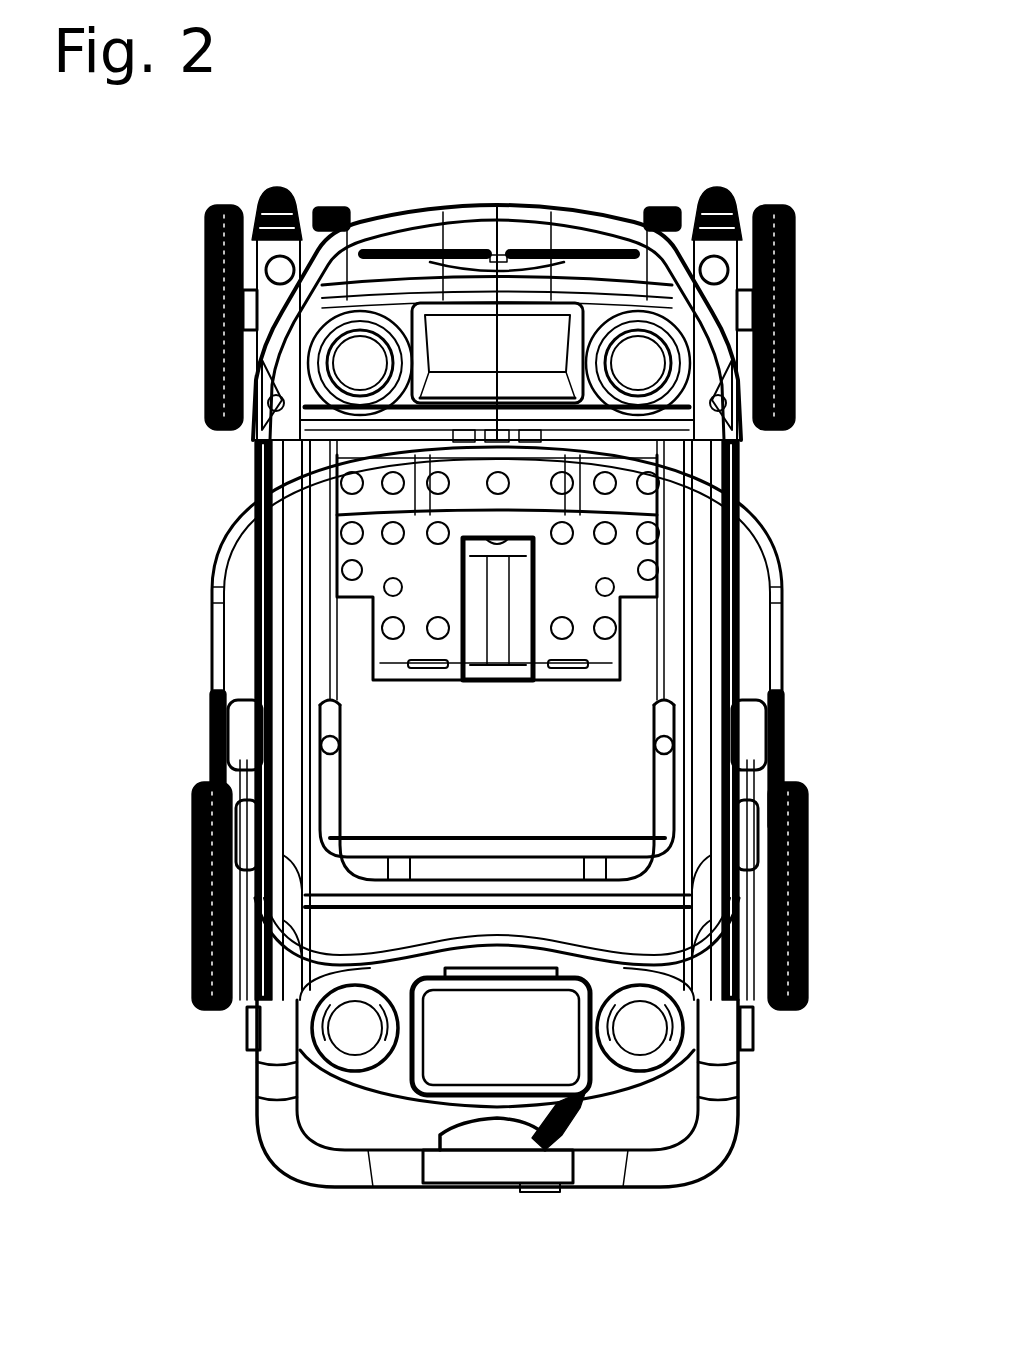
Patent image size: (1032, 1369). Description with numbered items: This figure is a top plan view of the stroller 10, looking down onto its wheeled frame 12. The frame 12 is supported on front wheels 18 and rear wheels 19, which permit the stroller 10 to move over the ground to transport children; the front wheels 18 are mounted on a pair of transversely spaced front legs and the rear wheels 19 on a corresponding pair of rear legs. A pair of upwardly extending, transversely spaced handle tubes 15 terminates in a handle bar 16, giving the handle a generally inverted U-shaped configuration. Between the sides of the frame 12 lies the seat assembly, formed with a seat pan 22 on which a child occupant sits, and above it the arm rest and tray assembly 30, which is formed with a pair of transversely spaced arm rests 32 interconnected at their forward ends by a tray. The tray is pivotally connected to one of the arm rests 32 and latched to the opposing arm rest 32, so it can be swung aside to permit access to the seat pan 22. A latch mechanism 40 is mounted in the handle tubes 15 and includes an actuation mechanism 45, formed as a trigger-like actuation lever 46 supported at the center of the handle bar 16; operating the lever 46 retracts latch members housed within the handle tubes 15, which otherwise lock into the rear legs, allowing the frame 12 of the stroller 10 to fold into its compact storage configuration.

The stroller 10 is at (683, 148).
The wheeled frame 12 is at (205, 504).
The handle tubes 15 is at (268, 1045).
The handle bar 16 is at (392, 1178).
The front wheels 18 is at (787, 205).
The rear wheels 19 is at (190, 812).
The seat pan 22 is at (580, 640).
The arm rest and tray assembly 30 is at (647, 373).
The arm rests 32 is at (262, 610).
The latch mechanism 40 is at (462, 1212).
The actuation mechanism 45 is at (513, 1208).
The actuation lever 46 is at (588, 1115).